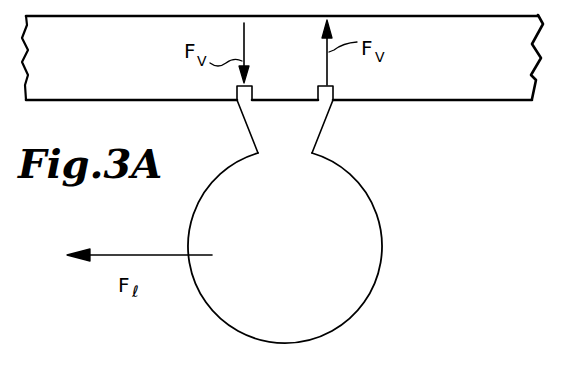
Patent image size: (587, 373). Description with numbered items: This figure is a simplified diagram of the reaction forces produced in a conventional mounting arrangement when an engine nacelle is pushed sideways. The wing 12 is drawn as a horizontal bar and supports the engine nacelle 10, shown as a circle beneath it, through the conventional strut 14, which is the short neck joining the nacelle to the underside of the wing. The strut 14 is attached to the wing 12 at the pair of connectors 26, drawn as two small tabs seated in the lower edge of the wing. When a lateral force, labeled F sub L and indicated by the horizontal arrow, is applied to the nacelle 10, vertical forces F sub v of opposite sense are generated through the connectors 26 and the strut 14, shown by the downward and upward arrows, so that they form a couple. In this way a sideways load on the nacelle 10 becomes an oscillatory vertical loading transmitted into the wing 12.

The engine nacelle 10 is at (303, 258).
The wing 12 is at (497, 85).
The strut assembly 14 is at (313, 121).
The connectors 26 is at (237, 86).